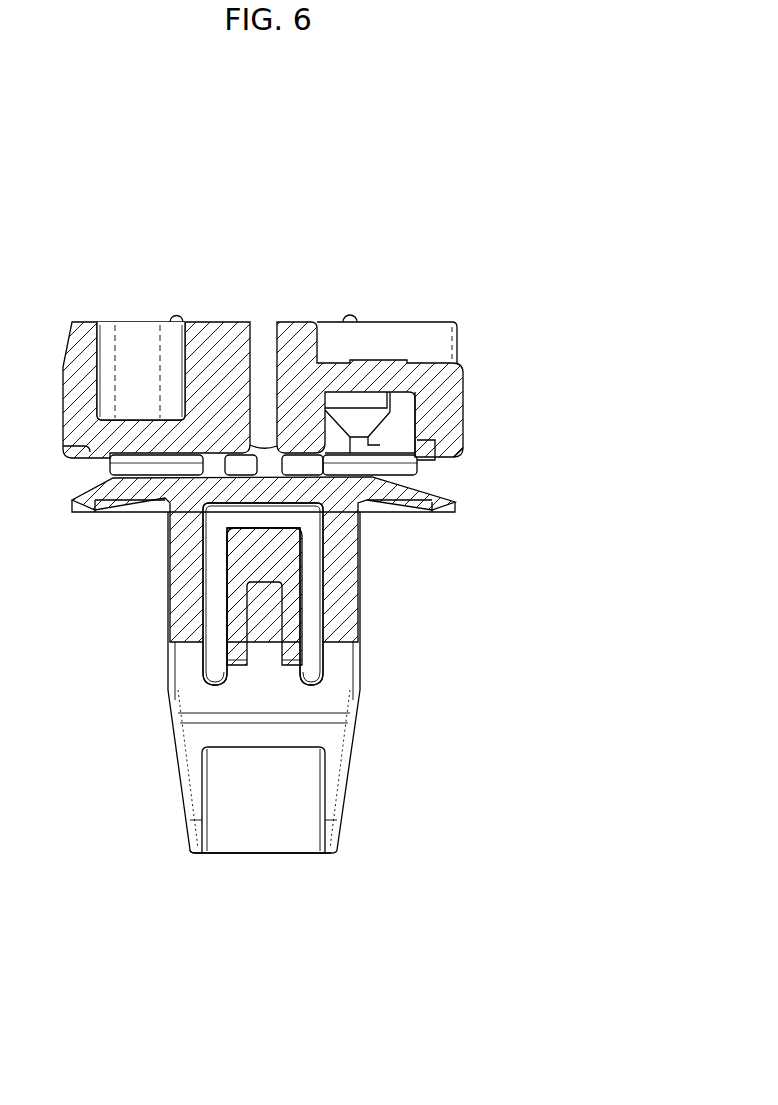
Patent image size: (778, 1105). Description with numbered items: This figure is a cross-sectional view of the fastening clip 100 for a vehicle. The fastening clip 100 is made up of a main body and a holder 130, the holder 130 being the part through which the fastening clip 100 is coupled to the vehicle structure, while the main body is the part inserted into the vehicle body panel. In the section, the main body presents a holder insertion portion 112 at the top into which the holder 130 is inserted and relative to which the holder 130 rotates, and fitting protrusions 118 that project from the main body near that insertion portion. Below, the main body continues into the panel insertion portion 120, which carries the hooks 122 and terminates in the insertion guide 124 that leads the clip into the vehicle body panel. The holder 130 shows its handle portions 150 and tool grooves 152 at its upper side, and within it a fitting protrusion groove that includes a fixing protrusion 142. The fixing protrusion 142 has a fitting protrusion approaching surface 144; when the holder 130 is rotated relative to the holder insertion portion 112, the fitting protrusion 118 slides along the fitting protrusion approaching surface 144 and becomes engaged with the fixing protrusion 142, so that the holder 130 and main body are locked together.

The fastening clip 100 is at (256, 123).
The holder insertion portion 112 is at (267, 327).
The fitting protrusion 118 is at (415, 396).
The panel insertion portion 120 is at (402, 650).
The hook 122 is at (228, 587).
The insertion guide 124 is at (198, 853).
The holder 130 is at (475, 431).
The fixing protrusion 142 is at (440, 433).
The fitting protrusion approaching surface 144 is at (364, 408).
The handle portion 150 is at (430, 322).
The tool groove 152 is at (137, 346).